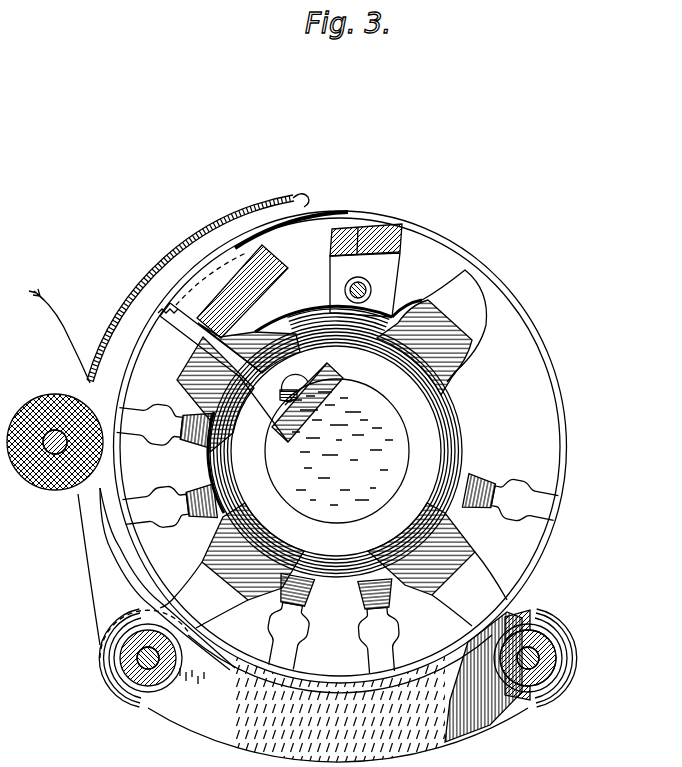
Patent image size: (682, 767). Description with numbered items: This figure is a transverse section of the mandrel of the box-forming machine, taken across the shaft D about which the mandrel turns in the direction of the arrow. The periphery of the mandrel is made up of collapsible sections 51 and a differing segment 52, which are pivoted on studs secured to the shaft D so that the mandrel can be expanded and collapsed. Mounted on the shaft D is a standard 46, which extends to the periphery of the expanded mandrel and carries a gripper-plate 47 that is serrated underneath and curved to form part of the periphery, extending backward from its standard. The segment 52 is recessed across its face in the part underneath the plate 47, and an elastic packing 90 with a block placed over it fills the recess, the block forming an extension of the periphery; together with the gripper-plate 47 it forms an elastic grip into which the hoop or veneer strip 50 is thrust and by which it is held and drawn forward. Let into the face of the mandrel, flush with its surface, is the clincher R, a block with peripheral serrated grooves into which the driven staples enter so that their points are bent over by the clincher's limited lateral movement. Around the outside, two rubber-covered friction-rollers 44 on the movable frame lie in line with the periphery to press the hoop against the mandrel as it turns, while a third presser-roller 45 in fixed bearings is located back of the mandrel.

The friction-rollers 44 is at (590, 675).
The third friction-roller 45 is at (81, 353).
The standard 46 is at (262, 402).
The gripper-plate 47 is at (175, 276).
The strip 50 is at (400, 222).
The mandrel sections 51 is at (338, 536).
The mandrel segment 52 is at (282, 298).
The elastic packing 90 is at (277, 267).
The clincher R is at (357, 250).
The shaft D is at (337, 451).